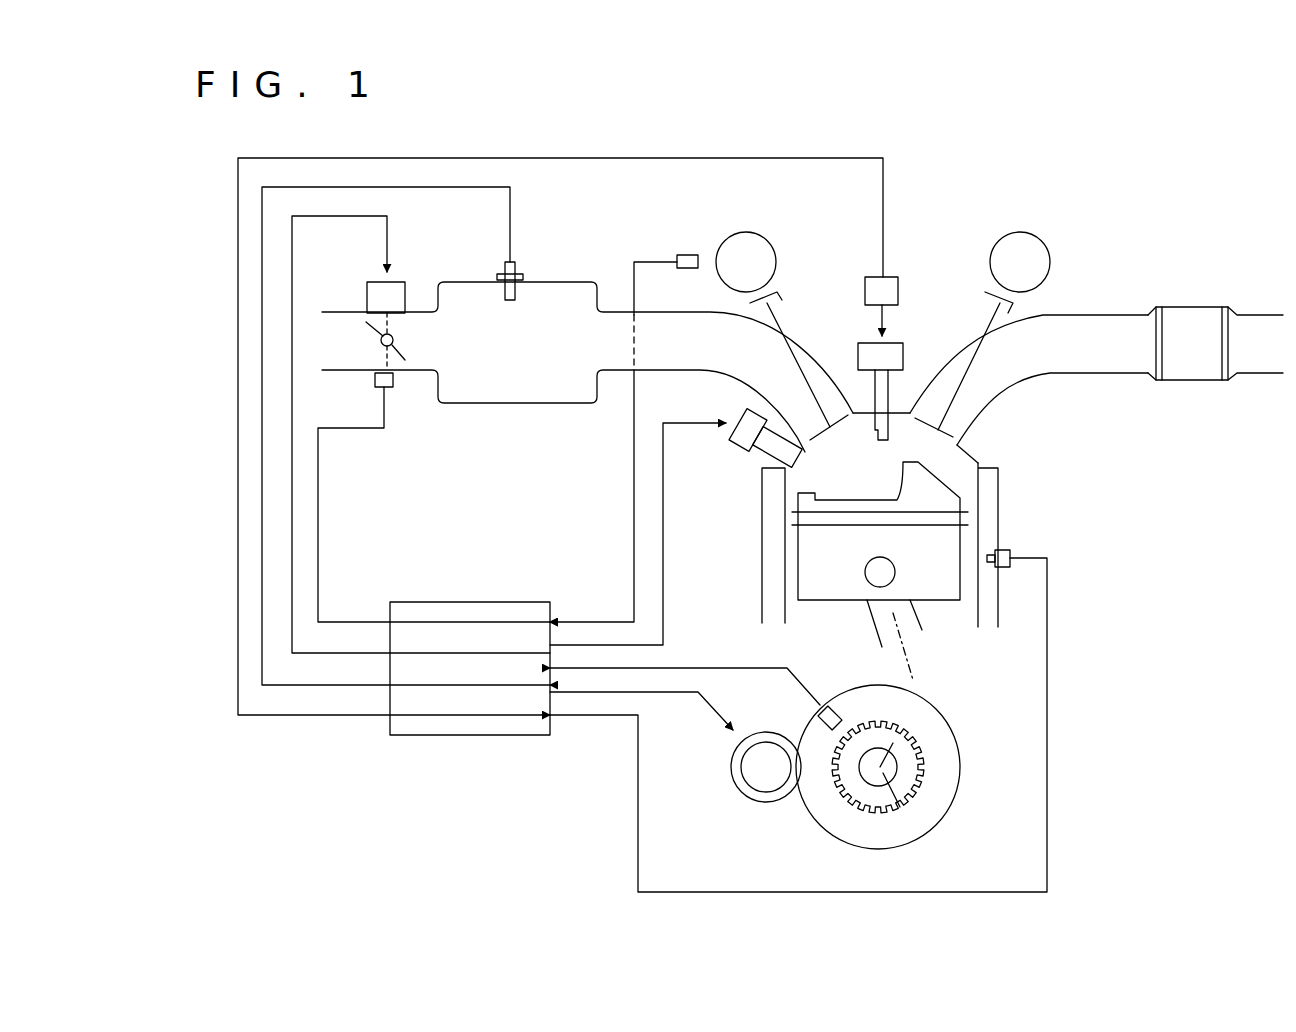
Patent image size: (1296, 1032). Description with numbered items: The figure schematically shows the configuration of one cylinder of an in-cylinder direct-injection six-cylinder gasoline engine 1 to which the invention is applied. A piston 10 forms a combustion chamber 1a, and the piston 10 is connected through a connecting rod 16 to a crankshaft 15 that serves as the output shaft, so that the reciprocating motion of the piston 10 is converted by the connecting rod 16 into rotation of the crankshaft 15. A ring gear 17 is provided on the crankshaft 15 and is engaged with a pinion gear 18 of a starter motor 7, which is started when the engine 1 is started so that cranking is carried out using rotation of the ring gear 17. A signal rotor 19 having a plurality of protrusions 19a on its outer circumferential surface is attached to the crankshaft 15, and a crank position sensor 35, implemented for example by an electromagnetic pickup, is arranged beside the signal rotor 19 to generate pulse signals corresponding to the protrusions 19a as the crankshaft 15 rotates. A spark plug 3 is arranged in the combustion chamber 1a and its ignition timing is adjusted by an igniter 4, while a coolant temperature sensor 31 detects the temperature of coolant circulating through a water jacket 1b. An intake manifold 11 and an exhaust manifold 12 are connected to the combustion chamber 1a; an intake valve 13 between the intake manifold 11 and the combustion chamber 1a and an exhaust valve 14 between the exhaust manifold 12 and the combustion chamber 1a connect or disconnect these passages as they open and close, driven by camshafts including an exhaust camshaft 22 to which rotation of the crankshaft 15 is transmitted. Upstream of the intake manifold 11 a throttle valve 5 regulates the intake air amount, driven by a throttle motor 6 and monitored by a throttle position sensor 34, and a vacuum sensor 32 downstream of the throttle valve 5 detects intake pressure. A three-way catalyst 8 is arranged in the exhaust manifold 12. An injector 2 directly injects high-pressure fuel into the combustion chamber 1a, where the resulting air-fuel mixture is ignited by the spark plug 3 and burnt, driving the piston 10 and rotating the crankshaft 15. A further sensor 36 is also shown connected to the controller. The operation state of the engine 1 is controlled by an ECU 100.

The engine 1 is at (926, 554).
The combustion chamber 1a is at (833, 478).
The water jacket 1b is at (988, 508).
The injector 2 is at (733, 448).
The spark plug 3 is at (898, 343).
The igniter 4 is at (883, 275).
The throttle valve 5 is at (398, 352).
The throttle motor 6 is at (400, 282).
The starter motor 7 is at (728, 773).
The three-way catalyst 8 is at (1180, 303).
The piston 10 is at (815, 565).
The intake manifold 11 is at (740, 372).
The exhaust manifold 12 is at (985, 400).
The intake valve 13 is at (833, 400).
The exhaust valve 14 is at (932, 393).
The crankshaft 15 is at (887, 780).
The connecting rod 16 is at (920, 613).
The ring gear 17 is at (820, 833).
The pinion gear 18 is at (768, 782).
The signal rotor 19 is at (905, 783).
The protrusions 19a is at (917, 723).
The exhaust camshaft 22 is at (1023, 240).
The coolant temperature sensor 31 is at (1008, 550).
The vacuum sensor 32 is at (520, 268).
The throttle position sensor 34 is at (394, 390).
The crank position sensor 35 is at (835, 697).
The intake pressure sensor 36 is at (683, 255).
The ECU 100 is at (468, 602).